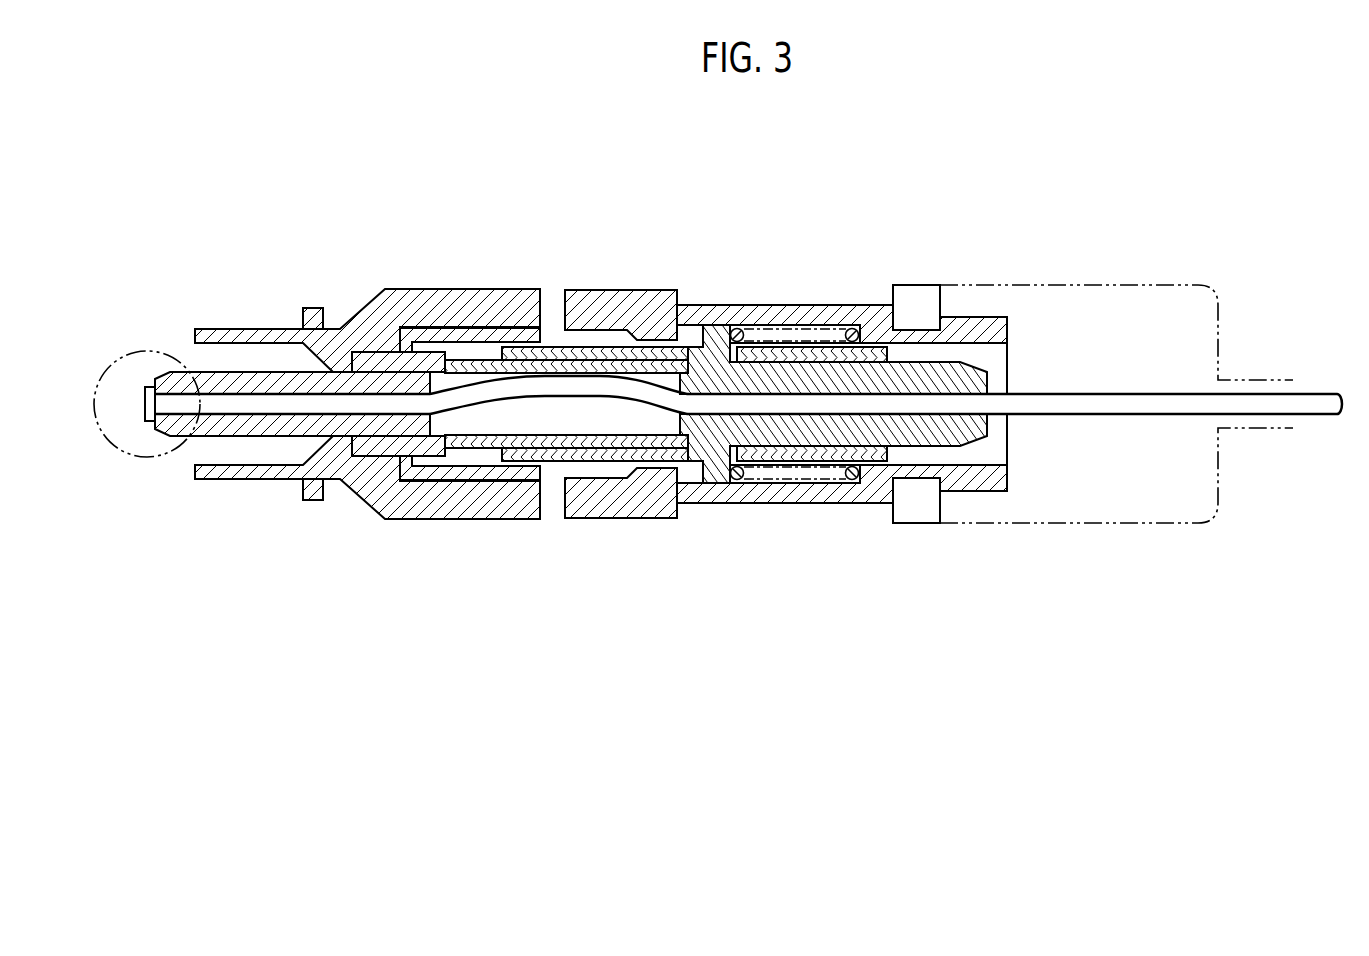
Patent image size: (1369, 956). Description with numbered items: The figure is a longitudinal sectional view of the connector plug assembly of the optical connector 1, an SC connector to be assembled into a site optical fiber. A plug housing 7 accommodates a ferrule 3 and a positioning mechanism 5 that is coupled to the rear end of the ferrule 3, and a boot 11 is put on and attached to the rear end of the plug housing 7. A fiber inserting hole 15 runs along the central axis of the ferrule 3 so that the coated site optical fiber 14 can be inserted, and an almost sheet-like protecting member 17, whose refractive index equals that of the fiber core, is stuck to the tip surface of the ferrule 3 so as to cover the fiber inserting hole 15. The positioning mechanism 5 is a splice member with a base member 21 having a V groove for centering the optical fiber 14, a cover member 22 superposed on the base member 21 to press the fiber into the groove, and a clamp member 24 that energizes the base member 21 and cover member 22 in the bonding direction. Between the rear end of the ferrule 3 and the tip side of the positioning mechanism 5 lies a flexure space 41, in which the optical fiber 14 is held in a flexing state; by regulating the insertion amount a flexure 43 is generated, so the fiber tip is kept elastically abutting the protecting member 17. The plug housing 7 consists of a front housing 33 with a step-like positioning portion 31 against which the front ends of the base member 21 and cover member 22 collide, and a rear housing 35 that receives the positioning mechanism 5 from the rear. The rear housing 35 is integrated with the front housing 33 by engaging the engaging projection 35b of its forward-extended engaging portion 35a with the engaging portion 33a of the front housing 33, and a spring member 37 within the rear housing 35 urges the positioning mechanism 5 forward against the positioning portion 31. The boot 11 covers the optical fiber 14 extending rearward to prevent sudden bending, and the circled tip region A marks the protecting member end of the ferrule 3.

The optical connector 1 is at (842, 412).
The ferrule 3 is at (280, 432).
The positioning mechanism 5 is at (833, 406).
The plug housing 7 is at (436, 411).
The boot 11 is at (1052, 523).
The optical fiber 14 is at (1150, 417).
The fiber inserting hole 15 is at (233, 403).
The protecting member 17 is at (142, 408).
The base member 21 is at (918, 447).
The cover member 22 is at (912, 368).
The clamp member 24 is at (557, 460).
The positioning portion 31 is at (333, 441).
The front housing 33 is at (440, 522).
The engaging portion 33a is at (552, 293).
The rear housing 35 is at (850, 503).
The engaging portion 35a is at (475, 338).
The engaging projection 35b is at (561, 292).
The spring member 37 is at (747, 478).
The flexure space 41 is at (636, 458).
The flexure 43 is at (606, 382).
The enlarged region A is at (138, 348).